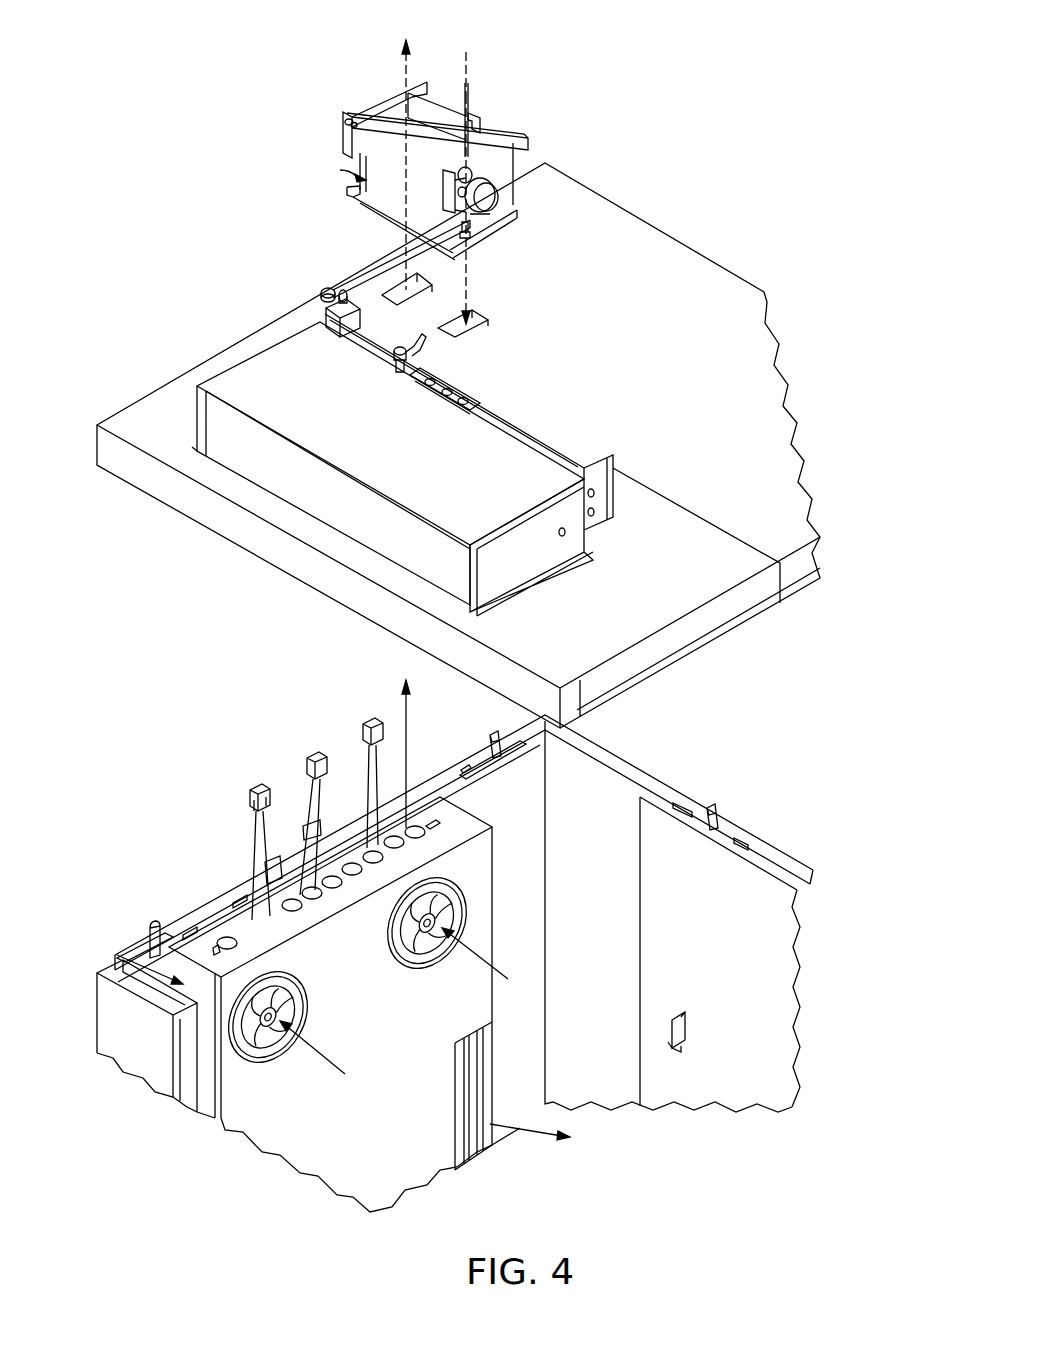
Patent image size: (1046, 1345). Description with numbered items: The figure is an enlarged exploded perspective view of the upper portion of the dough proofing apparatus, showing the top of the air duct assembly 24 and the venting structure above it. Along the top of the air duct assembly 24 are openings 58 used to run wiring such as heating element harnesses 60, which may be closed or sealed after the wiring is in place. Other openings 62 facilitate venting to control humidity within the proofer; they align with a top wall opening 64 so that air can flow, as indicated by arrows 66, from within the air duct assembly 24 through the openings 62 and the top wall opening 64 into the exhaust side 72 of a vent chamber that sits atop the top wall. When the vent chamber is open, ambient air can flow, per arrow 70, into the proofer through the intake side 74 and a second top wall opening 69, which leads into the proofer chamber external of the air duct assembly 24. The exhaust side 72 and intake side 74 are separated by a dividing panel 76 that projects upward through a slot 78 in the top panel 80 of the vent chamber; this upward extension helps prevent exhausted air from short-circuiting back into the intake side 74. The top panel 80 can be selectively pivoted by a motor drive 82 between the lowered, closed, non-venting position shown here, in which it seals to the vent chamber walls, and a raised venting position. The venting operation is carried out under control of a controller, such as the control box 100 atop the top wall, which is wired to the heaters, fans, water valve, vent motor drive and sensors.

The air duct assembly 24 is at (143, 948).
The openings 58 is at (284, 894).
The heating element harnesses 60 is at (242, 801).
The openings 62 is at (427, 848).
The top wall opening 64 is at (397, 287).
The arrows 66 is at (405, 78).
The top wall opening 69 is at (477, 330).
The arrow 70 is at (467, 284).
The exhaust side 72 is at (408, 100).
The intake side 74 is at (513, 142).
The dividing panel 76 is at (453, 97).
The slot 78 is at (467, 130).
The top panel 80 is at (383, 122).
The motor drive 82 is at (500, 201).
The control box 100 is at (301, 477).